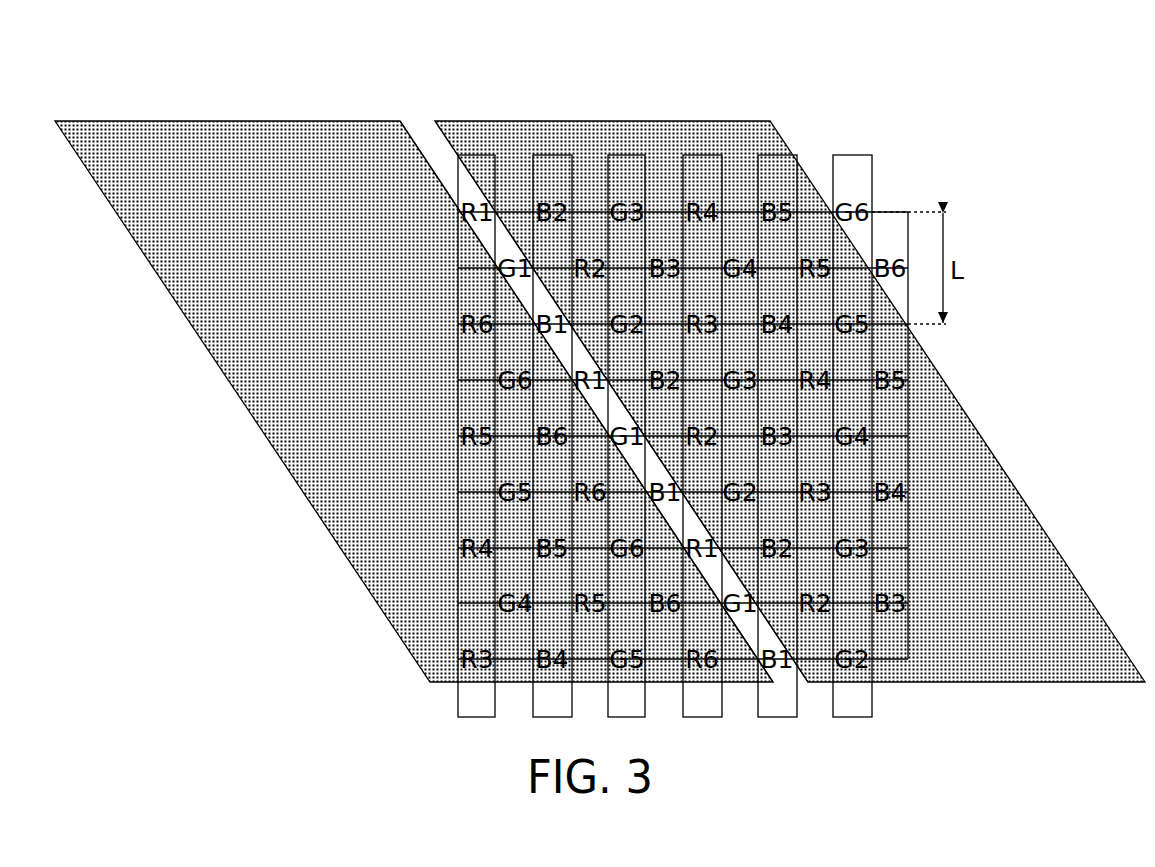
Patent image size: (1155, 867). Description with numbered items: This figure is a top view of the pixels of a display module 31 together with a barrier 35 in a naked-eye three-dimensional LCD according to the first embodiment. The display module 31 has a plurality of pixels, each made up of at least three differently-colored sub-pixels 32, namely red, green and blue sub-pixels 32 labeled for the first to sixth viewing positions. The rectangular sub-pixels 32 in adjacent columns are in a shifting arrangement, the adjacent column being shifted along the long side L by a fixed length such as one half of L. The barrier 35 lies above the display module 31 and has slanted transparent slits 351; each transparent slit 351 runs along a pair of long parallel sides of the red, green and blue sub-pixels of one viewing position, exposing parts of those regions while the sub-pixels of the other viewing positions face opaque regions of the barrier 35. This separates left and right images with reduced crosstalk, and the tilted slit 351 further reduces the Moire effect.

The display module 31 is at (910, 198).
The sub-pixel 32 is at (856, 170).
The barrier 35 is at (982, 440).
The transparent slit 351 is at (428, 134).